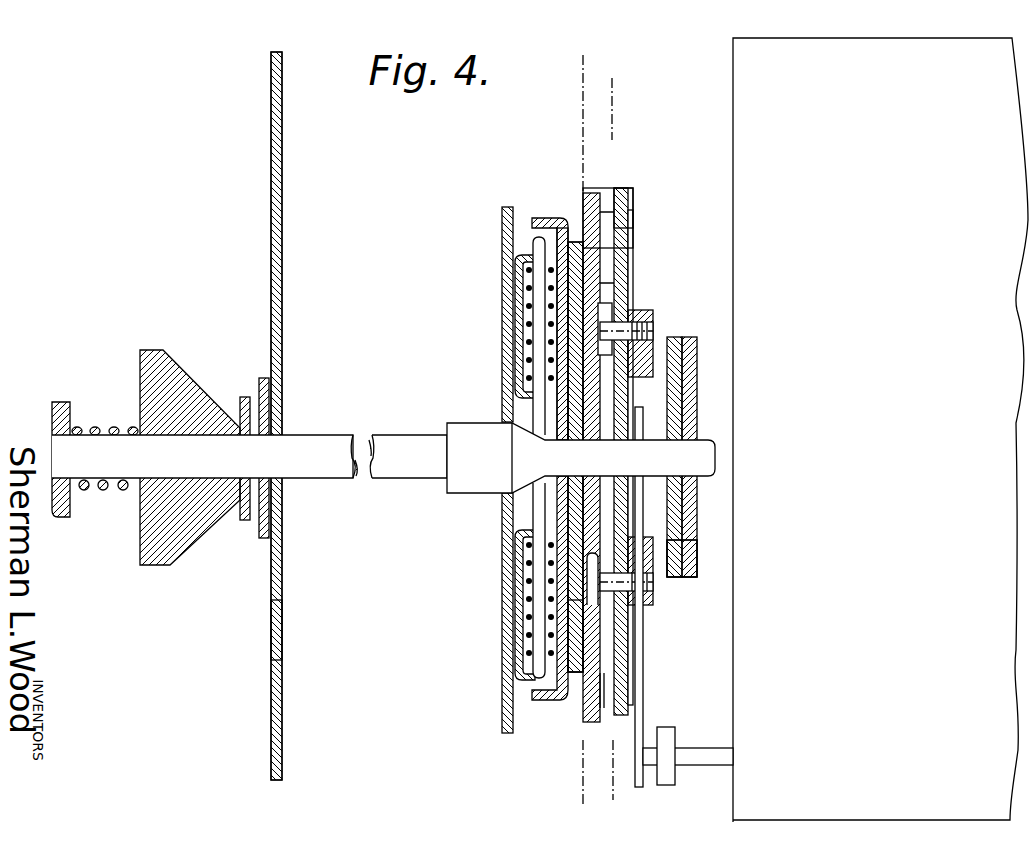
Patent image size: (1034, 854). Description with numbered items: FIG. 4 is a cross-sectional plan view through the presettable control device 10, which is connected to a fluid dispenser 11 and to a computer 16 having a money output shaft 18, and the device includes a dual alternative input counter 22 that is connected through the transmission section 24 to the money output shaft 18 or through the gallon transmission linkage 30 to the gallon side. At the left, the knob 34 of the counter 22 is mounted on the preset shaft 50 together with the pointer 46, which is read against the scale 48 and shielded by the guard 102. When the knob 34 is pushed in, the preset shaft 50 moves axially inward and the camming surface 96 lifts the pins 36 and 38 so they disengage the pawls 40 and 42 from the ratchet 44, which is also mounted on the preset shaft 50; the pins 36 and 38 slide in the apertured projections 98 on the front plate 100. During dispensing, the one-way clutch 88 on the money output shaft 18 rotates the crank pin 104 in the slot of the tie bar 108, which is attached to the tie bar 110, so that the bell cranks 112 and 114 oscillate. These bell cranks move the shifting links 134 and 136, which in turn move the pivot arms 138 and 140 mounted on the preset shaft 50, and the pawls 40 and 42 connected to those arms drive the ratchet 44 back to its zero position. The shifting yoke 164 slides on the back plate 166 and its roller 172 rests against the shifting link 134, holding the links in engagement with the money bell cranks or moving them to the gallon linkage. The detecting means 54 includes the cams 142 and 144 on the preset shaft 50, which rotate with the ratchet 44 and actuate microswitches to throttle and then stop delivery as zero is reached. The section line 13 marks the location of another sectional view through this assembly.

The presettable control device 10 is at (270, 630).
The fluid dispenser 11 is at (271, 160).
The section line 13 is at (590, 78).
The computer 16 is at (733, 797).
The money output shaft 18 is at (705, 748).
The dual alternative input counter 22 is at (330, 270).
The transmission section 24 is at (652, 152).
The gallon transmission linkage 30 is at (634, 190).
The knob 34 is at (60, 405).
The pin 36 is at (533, 242).
The pin 38 is at (538, 678).
The pawl 40 is at (533, 220).
The pawl 42 is at (540, 702).
The ratchet 44 is at (560, 333).
The pointer 46 is at (245, 397).
The scale 48 is at (264, 378).
The preset shaft 50 is at (380, 470).
The detecting means 54 is at (697, 378).
The one-way clutch 88 is at (668, 727).
The camming surface 96 is at (530, 438).
The apertured projections 98 is at (522, 394).
The front plate 100 is at (519, 278).
The guard 102 is at (158, 350).
The crank pin 104 is at (643, 780).
The tie bar 108 is at (633, 700).
The tie bar 110 is at (630, 220).
The bell crank 112 is at (604, 700).
The bell crank 114 is at (608, 210).
The shifting link 134 is at (596, 722).
The shifting link 136 is at (582, 242).
The pivot arm 138 is at (577, 676).
The pivot arm 140 is at (574, 243).
The cam 142 is at (678, 578).
The cam 144 is at (690, 578).
The shifting yoke 164 is at (655, 322).
The back plate 166 is at (655, 250).
The roller 172 is at (594, 555).